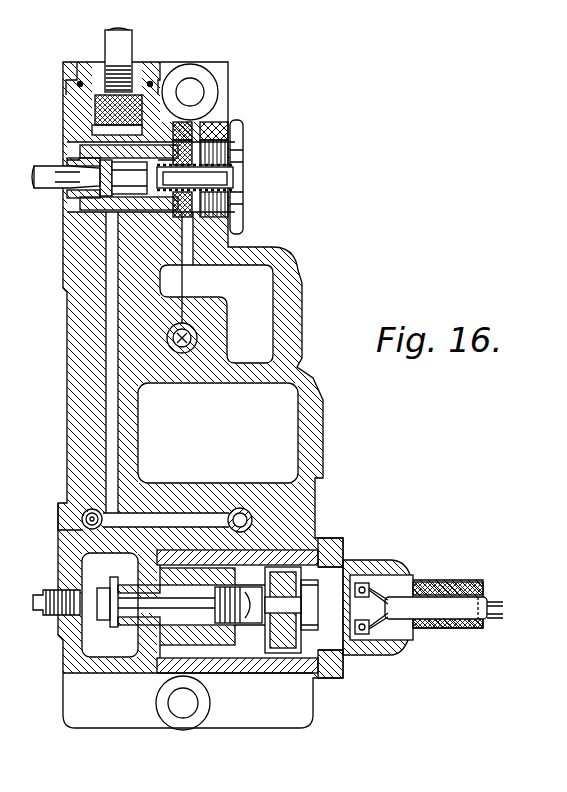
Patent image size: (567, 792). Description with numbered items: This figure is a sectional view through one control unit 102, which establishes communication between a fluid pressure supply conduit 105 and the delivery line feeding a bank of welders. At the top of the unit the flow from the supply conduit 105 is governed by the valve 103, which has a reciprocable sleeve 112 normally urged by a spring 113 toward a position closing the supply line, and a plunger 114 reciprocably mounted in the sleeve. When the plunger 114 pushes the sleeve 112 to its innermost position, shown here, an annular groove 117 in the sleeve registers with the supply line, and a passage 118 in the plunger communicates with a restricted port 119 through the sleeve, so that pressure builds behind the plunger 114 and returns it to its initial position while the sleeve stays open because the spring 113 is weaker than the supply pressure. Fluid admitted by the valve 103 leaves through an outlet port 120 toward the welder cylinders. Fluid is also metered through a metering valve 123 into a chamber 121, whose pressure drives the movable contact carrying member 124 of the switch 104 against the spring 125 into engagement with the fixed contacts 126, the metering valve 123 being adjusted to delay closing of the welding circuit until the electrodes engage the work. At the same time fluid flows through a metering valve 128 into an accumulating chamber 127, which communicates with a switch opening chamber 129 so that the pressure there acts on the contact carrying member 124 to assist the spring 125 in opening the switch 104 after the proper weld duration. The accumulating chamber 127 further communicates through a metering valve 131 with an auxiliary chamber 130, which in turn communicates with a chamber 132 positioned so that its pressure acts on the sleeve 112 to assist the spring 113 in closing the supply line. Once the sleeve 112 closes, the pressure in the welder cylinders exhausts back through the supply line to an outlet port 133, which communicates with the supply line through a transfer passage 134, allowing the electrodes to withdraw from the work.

The control unit 102 is at (334, 395).
The valve 103 is at (236, 121).
The switch 104 is at (349, 554).
The fluid pressure supply conduit 105 is at (125, 45).
The reciprocable sleeve 112 is at (72, 158).
The spring 113 is at (234, 168).
The plunger 114 is at (70, 186).
The annular groove 117 is at (100, 205).
The passage 118 is at (105, 174).
The restricted port 119 is at (88, 148).
The outlet port 120 is at (107, 470).
The chamber 121 is at (58, 627).
The metering valve 123 is at (88, 527).
The movable contact carrying member 124 is at (275, 630).
The spring 125 is at (133, 630).
The fixed contacts 126 is at (340, 670).
The accumulating chamber 127 is at (273, 450).
The metering valve 128 is at (240, 507).
The switch opening chamber 129 is at (330, 540).
The auxiliary chamber 130 is at (258, 320).
The metering valve 131 is at (192, 338).
The chamber 132 is at (180, 133).
The outlet port 133 is at (177, 112).
The transfer passage 134 is at (236, 194).